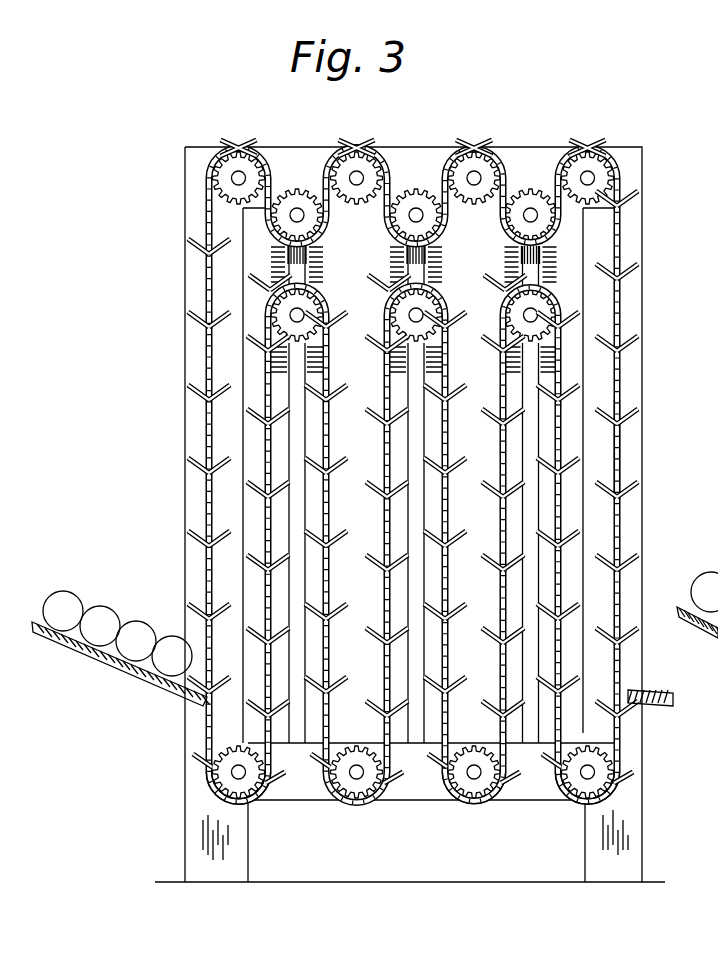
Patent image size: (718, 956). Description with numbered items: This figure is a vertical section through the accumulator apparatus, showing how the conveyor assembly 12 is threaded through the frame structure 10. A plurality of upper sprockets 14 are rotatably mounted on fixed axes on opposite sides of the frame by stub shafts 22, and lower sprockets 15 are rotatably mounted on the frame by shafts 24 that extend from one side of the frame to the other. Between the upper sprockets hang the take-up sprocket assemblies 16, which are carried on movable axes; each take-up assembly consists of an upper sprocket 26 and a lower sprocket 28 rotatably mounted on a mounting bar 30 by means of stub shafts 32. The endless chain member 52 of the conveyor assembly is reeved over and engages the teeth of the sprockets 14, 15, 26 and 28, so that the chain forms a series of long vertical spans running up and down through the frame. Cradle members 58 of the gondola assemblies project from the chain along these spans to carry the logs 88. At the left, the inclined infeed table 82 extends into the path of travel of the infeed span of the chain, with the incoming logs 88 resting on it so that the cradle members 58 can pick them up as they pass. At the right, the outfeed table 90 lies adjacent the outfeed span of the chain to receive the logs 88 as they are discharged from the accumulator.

The frame structure 10 is at (181, 321).
The conveyor assembly 12 is at (626, 401).
The upper sprockets 14 is at (215, 152).
The lower sprockets 15 is at (225, 793).
The take-up sprocket assemblies 16 is at (268, 268).
The stub shafts 22 is at (473, 152).
The shafts 24 is at (241, 780).
The upper sprockets of take-up assemblies 26 is at (297, 190).
The lower sprockets of take-up assemblies 28 is at (310, 302).
The mounting bar 30 is at (305, 258).
The stub shafts 32 is at (305, 318).
The endless chain member 52 is at (622, 450).
The cradle members 58 is at (190, 402).
The inclined infeed table 82 is at (110, 668).
The logs 88 is at (128, 622).
The outfeed table 90 is at (655, 705).